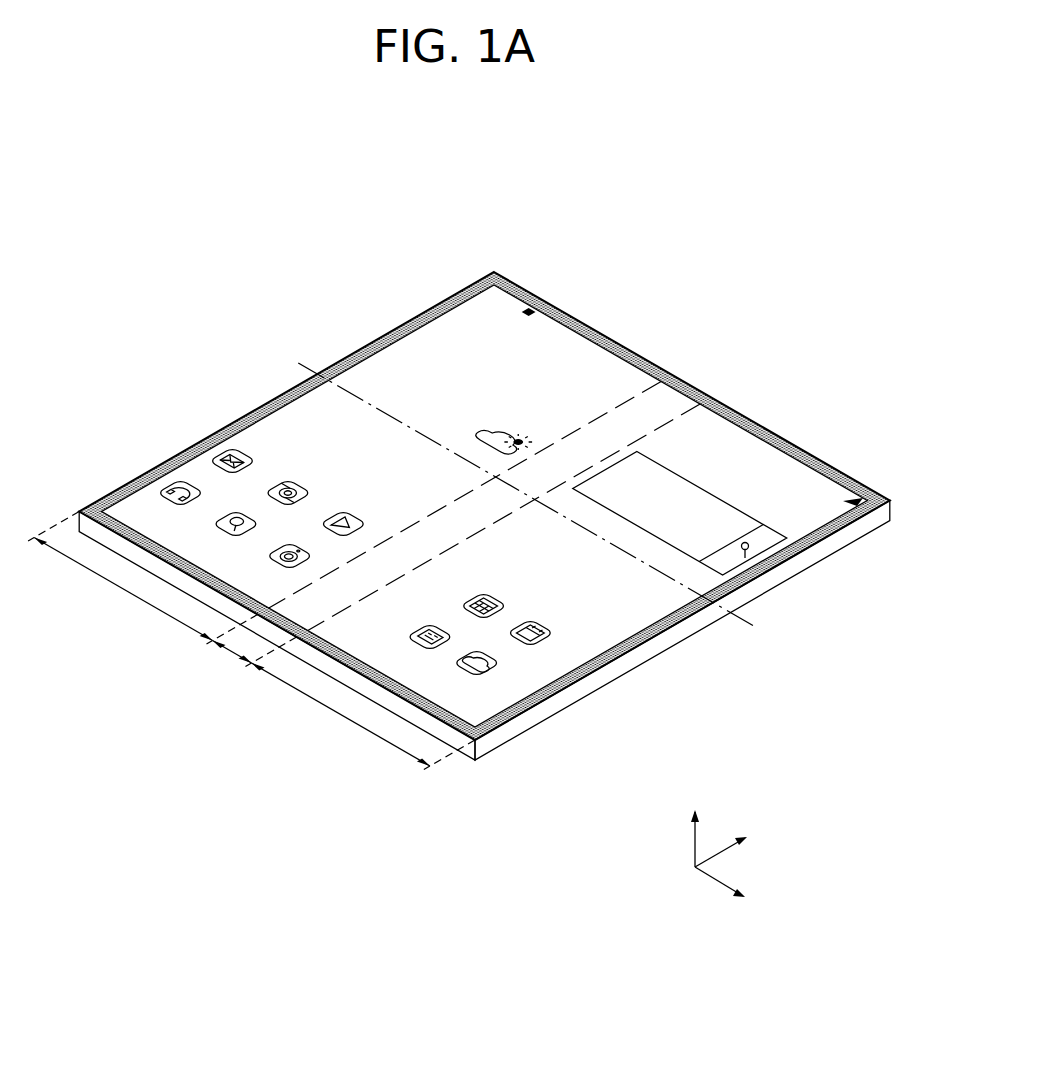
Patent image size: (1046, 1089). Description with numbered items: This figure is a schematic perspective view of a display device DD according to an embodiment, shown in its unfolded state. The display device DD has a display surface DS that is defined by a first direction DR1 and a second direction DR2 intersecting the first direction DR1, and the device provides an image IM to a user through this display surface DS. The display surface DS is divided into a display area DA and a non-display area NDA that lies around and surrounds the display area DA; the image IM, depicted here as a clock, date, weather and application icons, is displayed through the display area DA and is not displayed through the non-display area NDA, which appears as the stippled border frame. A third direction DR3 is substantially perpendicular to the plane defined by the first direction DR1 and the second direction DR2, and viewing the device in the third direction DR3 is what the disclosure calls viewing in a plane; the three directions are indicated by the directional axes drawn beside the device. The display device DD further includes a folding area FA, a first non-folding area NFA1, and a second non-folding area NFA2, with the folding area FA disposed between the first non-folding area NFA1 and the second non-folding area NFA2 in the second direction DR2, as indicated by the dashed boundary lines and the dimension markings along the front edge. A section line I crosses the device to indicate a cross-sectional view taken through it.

The display device DD is at (824, 309).
The display surface DS is at (598, 235).
The display area DA is at (485, 506).
The non-display area NDA is at (484, 506).
The image IM is at (232, 461).
The first non-folding area NFA1 is at (142, 578).
The folding area FA is at (453, 524).
The second non-folding area NFA2 is at (359, 703).
The section line I-I' I is at (526, 494).
The first direction DR1 is at (744, 845).
The second direction DR2 is at (744, 892).
The third direction DR3 is at (695, 828).